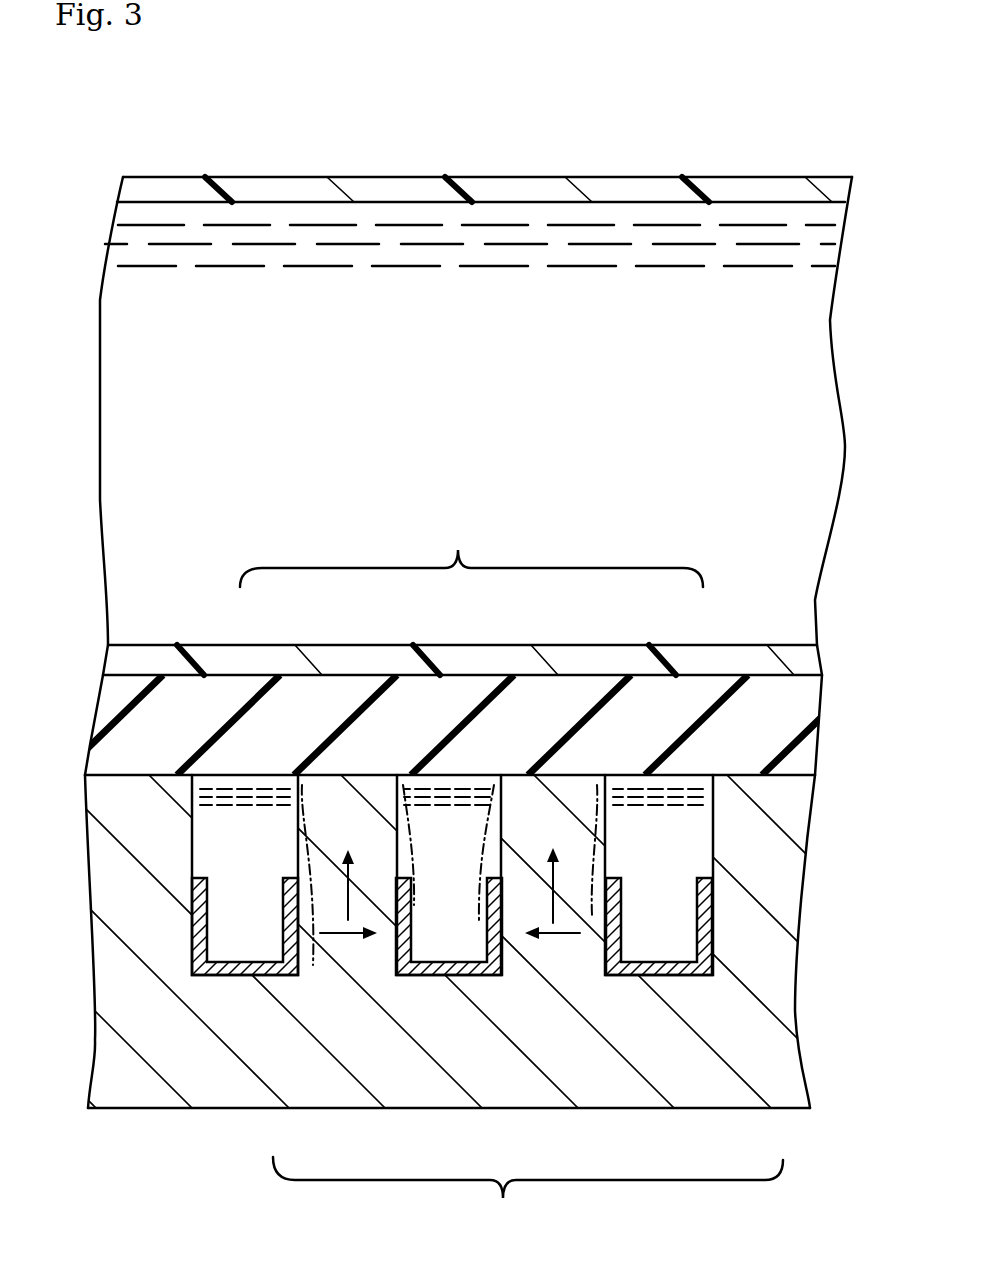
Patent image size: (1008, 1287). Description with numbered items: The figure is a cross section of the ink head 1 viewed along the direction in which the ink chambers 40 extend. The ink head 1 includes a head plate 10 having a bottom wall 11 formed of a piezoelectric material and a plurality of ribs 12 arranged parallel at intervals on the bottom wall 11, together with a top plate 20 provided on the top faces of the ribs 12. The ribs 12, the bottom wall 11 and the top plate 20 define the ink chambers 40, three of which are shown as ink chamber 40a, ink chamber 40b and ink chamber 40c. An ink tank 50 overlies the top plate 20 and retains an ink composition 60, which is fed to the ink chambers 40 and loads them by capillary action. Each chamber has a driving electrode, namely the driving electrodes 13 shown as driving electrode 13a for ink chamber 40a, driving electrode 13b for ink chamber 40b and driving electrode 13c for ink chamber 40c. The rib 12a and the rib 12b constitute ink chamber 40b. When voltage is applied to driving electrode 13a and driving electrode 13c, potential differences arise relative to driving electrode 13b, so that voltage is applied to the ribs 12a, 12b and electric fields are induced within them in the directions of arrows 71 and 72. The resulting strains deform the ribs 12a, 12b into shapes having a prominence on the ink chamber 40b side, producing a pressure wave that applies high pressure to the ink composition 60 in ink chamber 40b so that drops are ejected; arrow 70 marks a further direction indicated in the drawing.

The ink head 1 is at (455, 73).
The head plate 10 is at (810, 917).
The bottom wall 11 is at (213, 1080).
The ribs 12 is at (326, 790).
The rib 12a is at (354, 822).
The rib 12b is at (568, 818).
The driving electrodes 13 is at (528, 1197).
The driving electrode 13a is at (292, 985).
The driving electrode 13b is at (498, 985).
The driving electrode 13c is at (700, 985).
The top plate 20 is at (118, 742).
The ink chambers 40 is at (471, 542).
The ink chamber 40a is at (256, 832).
The ink chamber 40b is at (456, 818).
The ink chamber 40c is at (656, 830).
The ink tank 50 is at (773, 188).
The ink composition 60 is at (215, 848).
The reflected light 70 is at (350, 892).
The arrow 71 is at (337, 933).
The arrow 72 is at (563, 933).